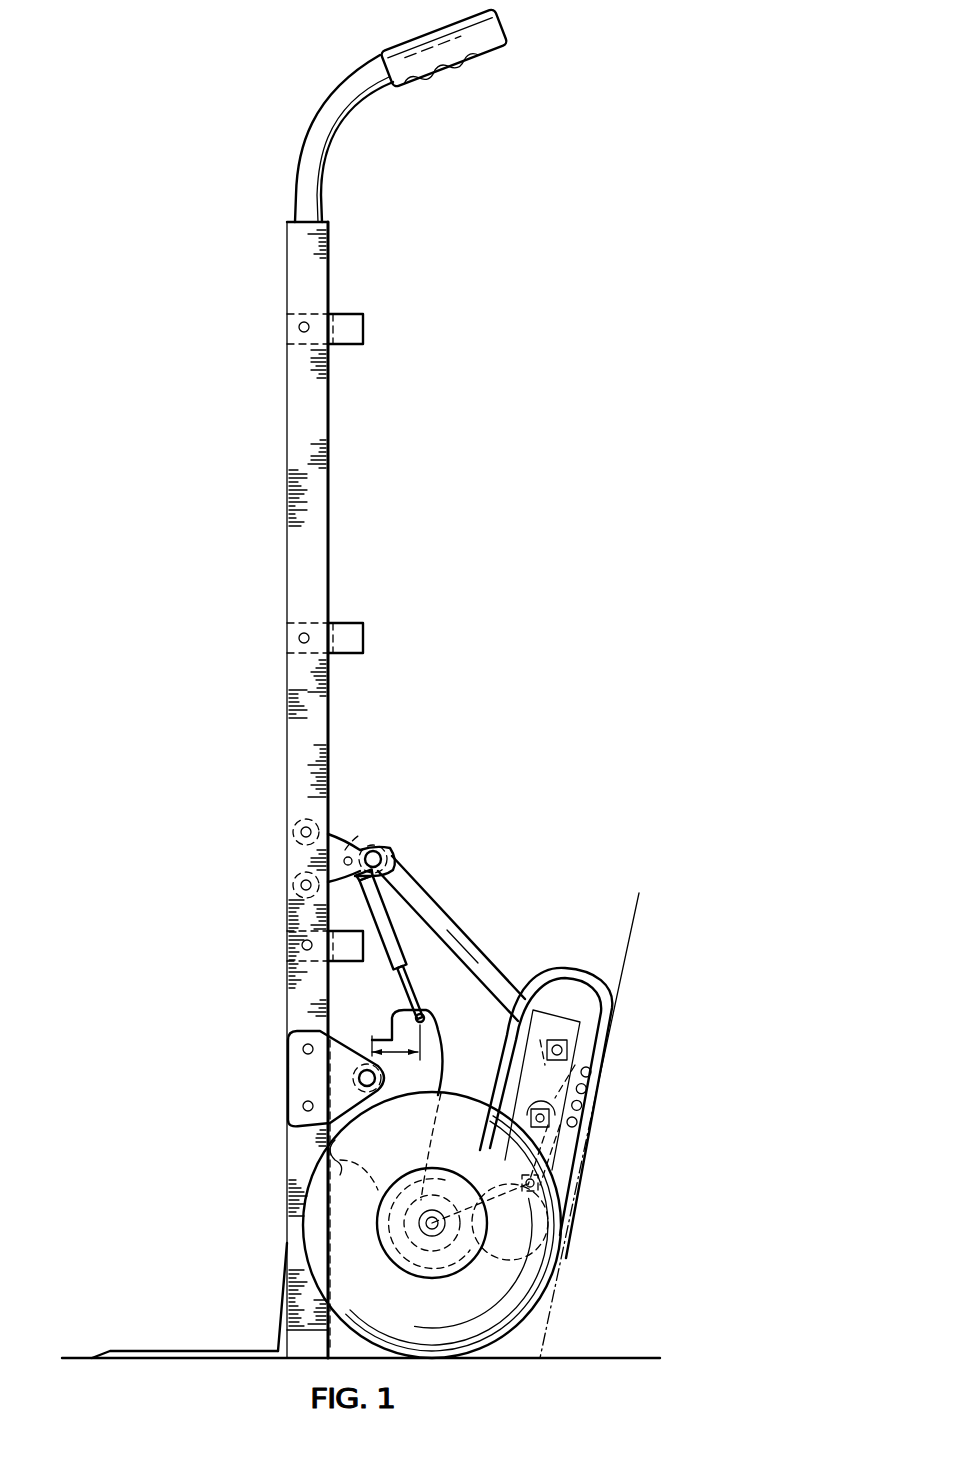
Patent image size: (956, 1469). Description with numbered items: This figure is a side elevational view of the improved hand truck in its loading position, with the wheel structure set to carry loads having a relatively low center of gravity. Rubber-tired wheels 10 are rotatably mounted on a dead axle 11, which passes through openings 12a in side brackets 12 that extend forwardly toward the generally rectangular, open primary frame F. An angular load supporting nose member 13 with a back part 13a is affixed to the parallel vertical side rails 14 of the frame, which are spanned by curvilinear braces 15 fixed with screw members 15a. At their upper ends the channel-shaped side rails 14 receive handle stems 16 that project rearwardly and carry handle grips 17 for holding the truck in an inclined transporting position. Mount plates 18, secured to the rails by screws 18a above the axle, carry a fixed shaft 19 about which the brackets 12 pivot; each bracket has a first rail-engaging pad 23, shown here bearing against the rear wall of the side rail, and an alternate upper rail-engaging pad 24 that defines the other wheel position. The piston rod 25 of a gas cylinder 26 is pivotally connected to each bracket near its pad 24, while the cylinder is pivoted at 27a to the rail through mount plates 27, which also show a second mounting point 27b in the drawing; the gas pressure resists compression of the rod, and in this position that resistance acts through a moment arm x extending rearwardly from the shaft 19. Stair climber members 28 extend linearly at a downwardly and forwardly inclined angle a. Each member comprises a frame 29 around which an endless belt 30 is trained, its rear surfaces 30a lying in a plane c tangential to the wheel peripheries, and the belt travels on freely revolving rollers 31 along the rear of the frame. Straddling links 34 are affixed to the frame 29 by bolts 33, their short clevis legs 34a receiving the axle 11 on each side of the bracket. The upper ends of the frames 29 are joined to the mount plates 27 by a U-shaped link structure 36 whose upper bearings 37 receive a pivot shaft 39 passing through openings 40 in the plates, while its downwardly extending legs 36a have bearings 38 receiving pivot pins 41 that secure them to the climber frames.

The rubber-tired wheels 10 is at (498, 1338).
The dead axle 11 is at (440, 1200).
The side brackets 12 is at (440, 1068).
The openings 12a is at (438, 1268).
The angular load supporting nose member 13 is at (158, 1340).
The back part 13a is at (280, 1310).
The side rails 14 is at (330, 685).
The curvilinear braces 15 is at (343, 318).
The screw members 15a is at (300, 637).
The handle stems 16 is at (331, 143).
The handle grips 17 is at (466, 47).
The mount plates 18 is at (308, 1068).
The screws 18a is at (300, 1102).
The fixed shaft 19 is at (358, 1080).
The first rail-engaging pad 23 is at (310, 1155).
The upper rail-engaging pad 24 is at (398, 1012).
The piston rod 25 is at (408, 972).
The gas cylinder 26 is at (392, 907).
The mount plates 27 is at (350, 846).
The pivot 27a is at (345, 860).
The lower bracket hole 27b is at (300, 885).
The stair climber members 28 is at (584, 962).
The frame 29 is at (558, 992).
The endless belt 30 is at (535, 985).
The rear surfaces 30a is at (600, 1100).
The rollers 31 is at (580, 1142).
The bolts 33 is at (572, 1150).
The straddling links 34 is at (572, 1188).
The clevis legs 34a is at (565, 1247).
The U-shaped link structure 36 is at (478, 945).
The downwardly extending legs 36a is at (472, 968).
The upper bearings 37 is at (358, 836).
The bearings 38 is at (575, 1065).
The pivot shaft 39 is at (390, 852).
The openings 40 is at (392, 867).
The pivot pins 41 is at (556, 1040).
The primary frame F is at (330, 425).
The plane c is at (622, 988).
The inclined angle a is at (560, 1291).
The moment arm x is at (389, 1032).